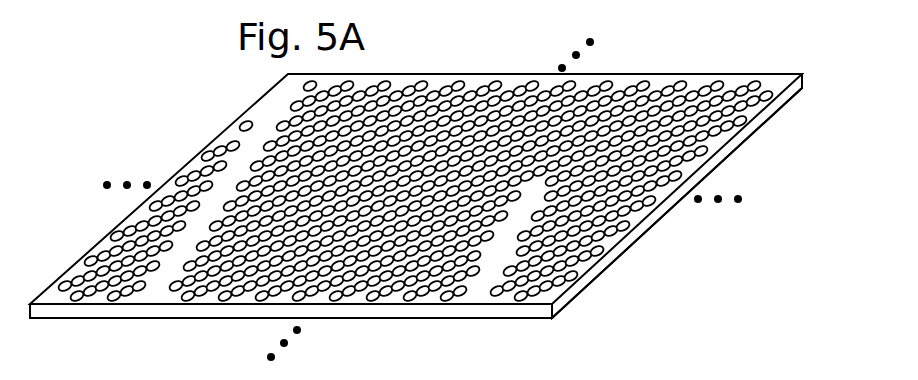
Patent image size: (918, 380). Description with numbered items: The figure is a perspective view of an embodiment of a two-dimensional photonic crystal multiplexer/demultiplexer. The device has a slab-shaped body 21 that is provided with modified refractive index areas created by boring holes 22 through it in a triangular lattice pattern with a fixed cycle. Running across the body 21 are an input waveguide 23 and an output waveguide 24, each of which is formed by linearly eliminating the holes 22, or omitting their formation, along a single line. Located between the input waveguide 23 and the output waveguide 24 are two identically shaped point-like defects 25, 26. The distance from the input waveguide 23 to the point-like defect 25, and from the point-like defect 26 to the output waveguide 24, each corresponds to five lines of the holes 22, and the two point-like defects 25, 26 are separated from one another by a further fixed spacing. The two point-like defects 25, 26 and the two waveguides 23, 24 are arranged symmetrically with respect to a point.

The body 21 is at (778, 80).
The holes 22 is at (752, 106).
The input waveguide 23 is at (350, 92).
The output waveguide 24 is at (692, 93).
The point-like defect 25 is at (350, 187).
The point-like defect 26 is at (500, 187).